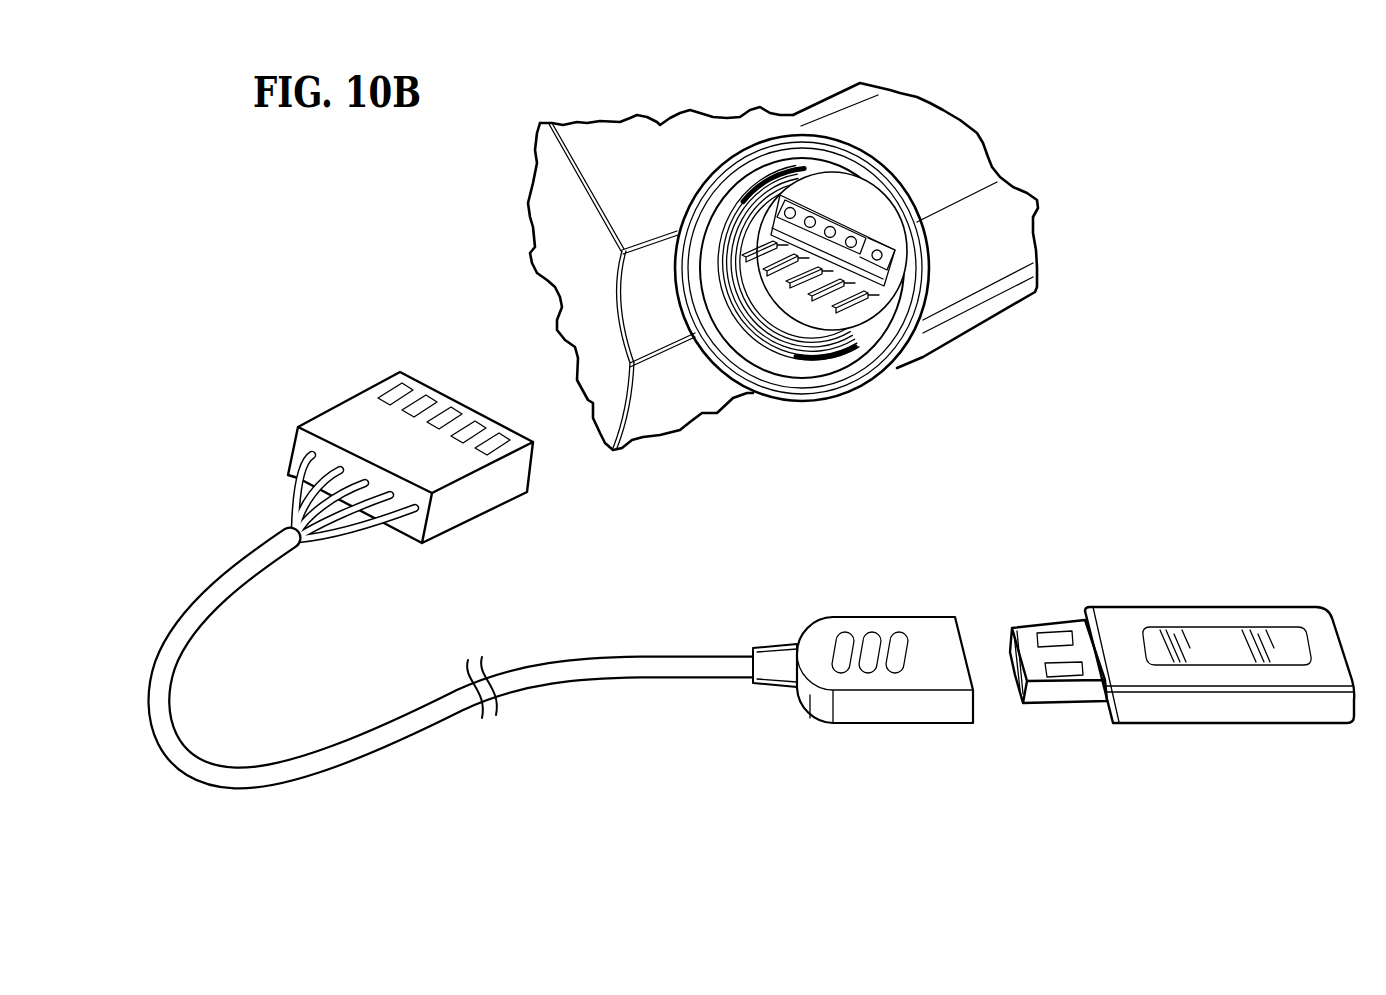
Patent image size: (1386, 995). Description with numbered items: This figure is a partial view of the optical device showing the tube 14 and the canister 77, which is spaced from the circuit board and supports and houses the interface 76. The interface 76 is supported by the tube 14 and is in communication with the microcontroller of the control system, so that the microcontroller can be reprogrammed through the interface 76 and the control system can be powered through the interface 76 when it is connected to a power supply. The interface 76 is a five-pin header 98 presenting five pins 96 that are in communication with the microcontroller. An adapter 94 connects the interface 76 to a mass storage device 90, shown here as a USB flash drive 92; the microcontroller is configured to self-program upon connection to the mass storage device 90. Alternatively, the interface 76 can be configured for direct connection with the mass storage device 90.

The tube 14 is at (697, 133).
The canister 77 is at (928, 128).
The interface 76 is at (790, 320).
The pins 96 is at (750, 243).
The five-pin header 98 is at (864, 302).
The adapter 94 is at (250, 772).
The mass storage device 90 is at (1182, 625).
The USB flash drive 92 is at (1202, 617).